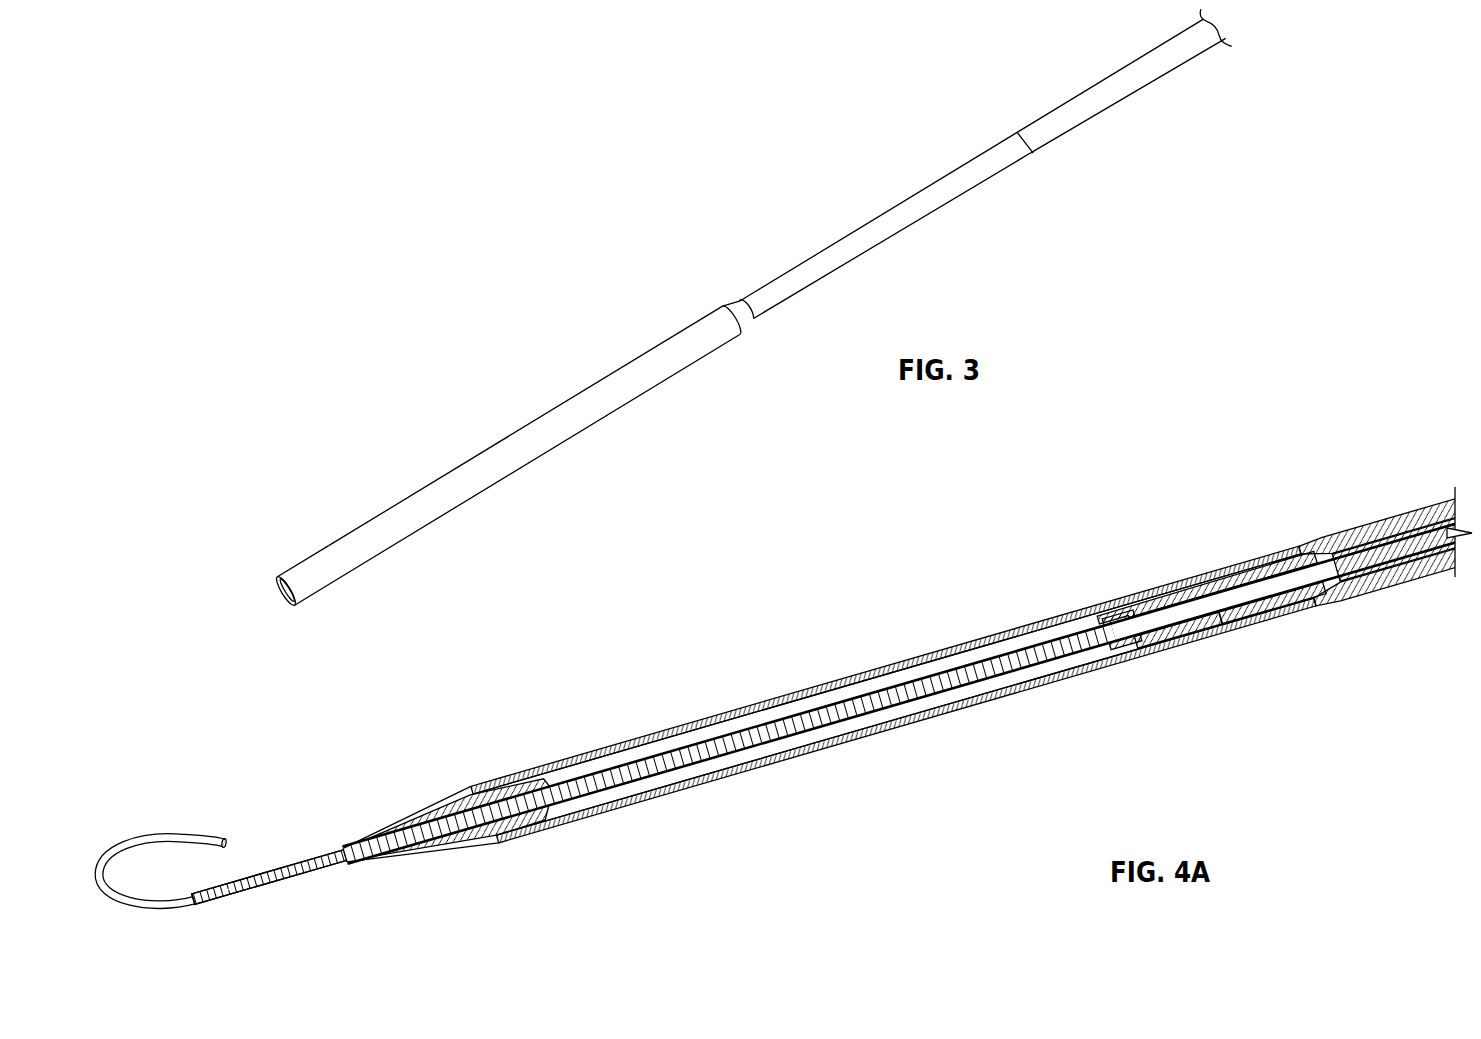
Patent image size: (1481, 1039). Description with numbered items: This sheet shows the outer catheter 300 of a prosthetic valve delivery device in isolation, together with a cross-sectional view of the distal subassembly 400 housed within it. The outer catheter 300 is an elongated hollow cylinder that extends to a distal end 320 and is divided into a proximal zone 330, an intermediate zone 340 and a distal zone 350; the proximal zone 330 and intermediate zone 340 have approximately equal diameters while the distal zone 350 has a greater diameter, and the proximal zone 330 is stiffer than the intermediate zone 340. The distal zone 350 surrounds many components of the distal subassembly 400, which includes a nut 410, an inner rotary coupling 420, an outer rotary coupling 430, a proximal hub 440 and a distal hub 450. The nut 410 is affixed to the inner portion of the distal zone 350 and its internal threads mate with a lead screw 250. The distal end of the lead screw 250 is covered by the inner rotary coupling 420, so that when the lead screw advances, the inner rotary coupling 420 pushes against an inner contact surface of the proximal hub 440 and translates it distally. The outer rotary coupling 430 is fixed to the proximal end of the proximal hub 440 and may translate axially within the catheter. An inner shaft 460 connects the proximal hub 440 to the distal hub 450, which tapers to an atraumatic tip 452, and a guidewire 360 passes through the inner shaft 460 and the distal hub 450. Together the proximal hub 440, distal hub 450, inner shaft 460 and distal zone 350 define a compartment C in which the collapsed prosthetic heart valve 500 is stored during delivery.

In FIG. 3, the outer catheter 300 is at (719, 306).
In FIG. 3, the distal end 320 is at (294, 503).
In FIG. 3, the proximal zone 330 is at (1104, 90).
In FIG. 3, the intermediate zone 340 is at (790, 283).
In FIG. 4A, the intermediate zone 340 is at (1362, 541).
In FIG. 3, the distal zone 350 is at (520, 437).
In FIG. 4A, the distal zone 350 is at (782, 691).
In FIG. 4A, the distal subassembly 400 is at (785, 693).
In FIG. 4A, the nut 410 is at (1300, 628).
In FIG. 4A, the inner rotary coupling 420 is at (1249, 628).
In FIG. 4A, the outer rotary coupling 430 is at (1220, 640).
In FIG. 4A, the proximal hub 440 is at (1176, 597).
In FIG. 4A, the distal hub 450 is at (510, 797).
In FIG. 4A, the atraumatic tip 452 is at (393, 825).
In FIG. 4A, the inner shaft 460 is at (884, 675).
In FIG. 4A, the prosthetic heart valve 500 is at (810, 737).
In FIG. 4A, the lead screw 250 is at (1418, 544).
In FIG. 4A, the guidewire 360 is at (1421, 565).
In FIG. 4A, the compartment C is at (712, 735).